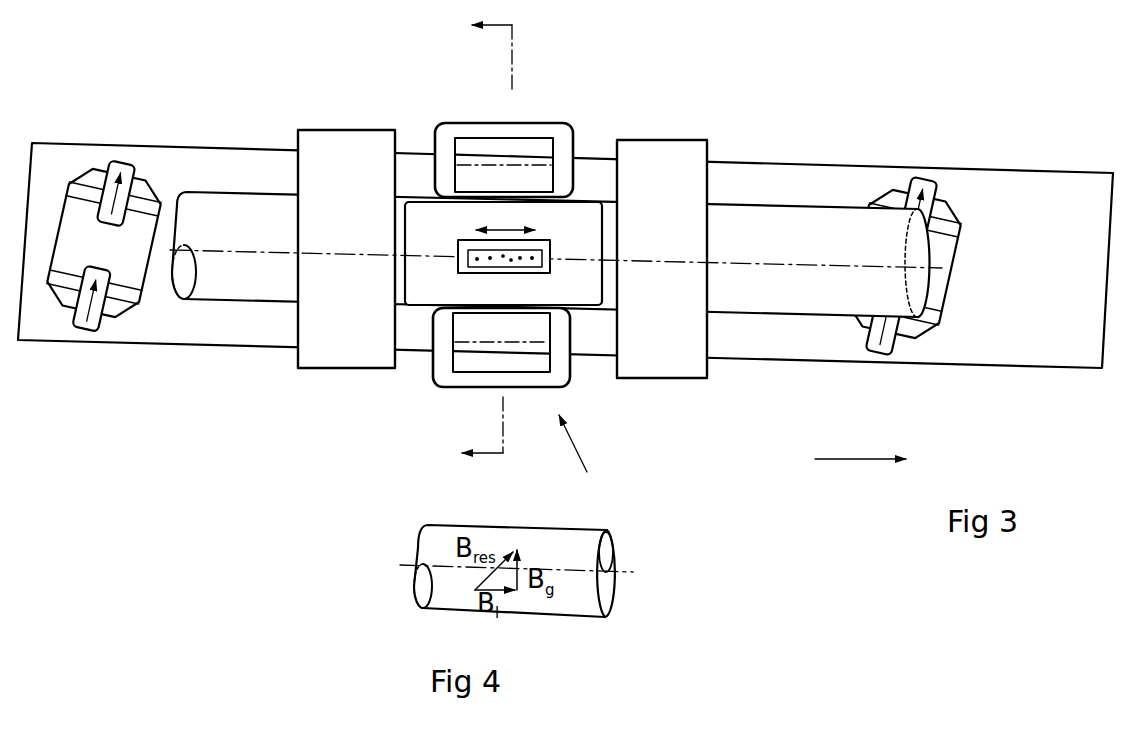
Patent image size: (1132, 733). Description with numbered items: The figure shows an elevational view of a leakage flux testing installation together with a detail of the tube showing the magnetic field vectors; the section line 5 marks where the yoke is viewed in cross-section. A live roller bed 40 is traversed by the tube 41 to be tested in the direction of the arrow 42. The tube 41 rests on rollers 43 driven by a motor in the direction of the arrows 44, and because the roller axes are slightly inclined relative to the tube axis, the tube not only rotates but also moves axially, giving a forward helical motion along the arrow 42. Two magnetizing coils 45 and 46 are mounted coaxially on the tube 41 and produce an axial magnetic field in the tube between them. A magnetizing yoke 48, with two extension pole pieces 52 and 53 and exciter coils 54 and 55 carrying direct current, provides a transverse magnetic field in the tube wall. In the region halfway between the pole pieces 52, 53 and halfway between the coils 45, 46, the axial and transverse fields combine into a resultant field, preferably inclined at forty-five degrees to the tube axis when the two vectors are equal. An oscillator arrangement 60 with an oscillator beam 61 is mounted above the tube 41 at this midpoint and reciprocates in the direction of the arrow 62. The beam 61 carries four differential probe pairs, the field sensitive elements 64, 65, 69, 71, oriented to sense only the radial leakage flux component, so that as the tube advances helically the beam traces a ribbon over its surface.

In FIG. 3, the section line V-V 5 is at (477, 244).
In FIG. 3, the live roller bed 40 is at (197, 325).
In FIG. 3, the tube 41 is at (760, 295).
In FIG. 4, the tube 41 is at (592, 592).
In FIG. 3, the arrow 42 is at (847, 465).
In FIG. 3, the rollers 43 is at (75, 262).
In FIG. 3, the arrows 44 is at (117, 205).
In FIG. 3, the magnetizing coil 45 is at (313, 348).
In FIG. 3, the magnetizing coil 46 is at (635, 357).
In FIG. 3, the magnetizing yoke 48 is at (580, 460).
In FIG. 3, the extension pole piece 52 is at (465, 343).
In FIG. 3, the extension pole piece 53 is at (525, 180).
In FIG. 3, the exciter coil 54 is at (460, 375).
In FIG. 3, the exciter coil 55 is at (447, 147).
In FIG. 3, the oscillator arrangement 60 is at (427, 242).
In FIG. 3, the oscillator beam 61 is at (535, 250).
In FIG. 3, the arrow 62 is at (505, 219).
In FIG. 3, the field sensitive element 64 is at (477, 263).
In FIG. 3, the field sensitive element 65 is at (490, 261).
In FIG. 3, the field sensitive element 69 is at (520, 261).
In FIG. 3, the field sensitive element 71 is at (532, 261).